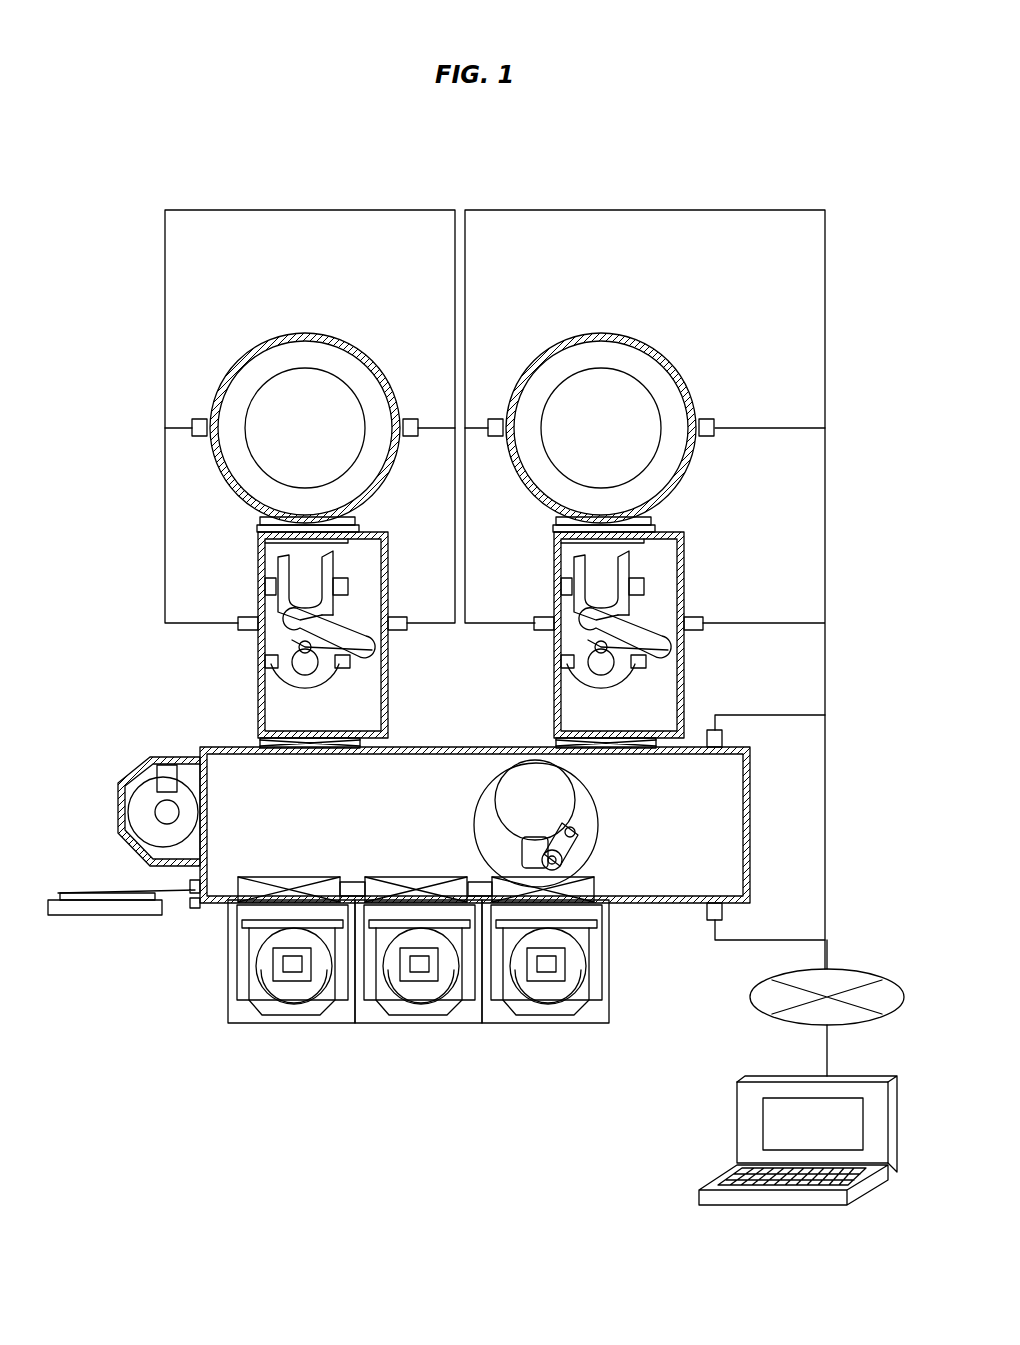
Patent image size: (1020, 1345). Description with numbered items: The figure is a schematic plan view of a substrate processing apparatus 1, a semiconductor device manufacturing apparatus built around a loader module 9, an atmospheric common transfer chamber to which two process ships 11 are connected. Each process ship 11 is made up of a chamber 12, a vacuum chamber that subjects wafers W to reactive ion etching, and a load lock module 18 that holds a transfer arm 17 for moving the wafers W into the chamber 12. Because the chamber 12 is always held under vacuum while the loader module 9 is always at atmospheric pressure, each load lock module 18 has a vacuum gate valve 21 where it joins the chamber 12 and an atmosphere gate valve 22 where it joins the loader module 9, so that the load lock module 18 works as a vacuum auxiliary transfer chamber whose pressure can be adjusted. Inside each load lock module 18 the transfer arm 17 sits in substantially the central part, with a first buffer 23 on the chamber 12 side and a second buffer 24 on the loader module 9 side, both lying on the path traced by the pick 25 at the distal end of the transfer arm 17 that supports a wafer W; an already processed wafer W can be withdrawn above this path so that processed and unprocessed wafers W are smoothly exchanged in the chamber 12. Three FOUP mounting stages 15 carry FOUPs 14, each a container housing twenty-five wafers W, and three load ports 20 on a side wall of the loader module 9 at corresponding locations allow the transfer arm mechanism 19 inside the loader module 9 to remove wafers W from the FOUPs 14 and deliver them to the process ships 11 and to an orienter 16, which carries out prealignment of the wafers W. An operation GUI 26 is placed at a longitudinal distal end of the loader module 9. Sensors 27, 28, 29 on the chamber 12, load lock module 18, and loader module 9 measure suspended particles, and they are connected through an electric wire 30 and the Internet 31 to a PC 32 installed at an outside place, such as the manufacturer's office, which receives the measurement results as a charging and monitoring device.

The substrate processing apparatus 1 is at (455, 170).
The loader module 9 is at (742, 745).
The process ship 11 is at (455, 378).
The chamber 12 is at (360, 347).
The FOUP 14 is at (258, 1015).
The FOUP mounting stage 15 is at (306, 1023).
The orienter 16 is at (130, 780).
The transfer arm 17 is at (372, 618).
The load lock module 18 is at (388, 576).
The transfer arm mechanism 19 is at (475, 825).
The load port 20 is at (293, 877).
The vacuum gate valve 21 is at (262, 518).
The atmosphere gate valve 22 is at (365, 742).
The first buffer 23 is at (268, 586).
The second buffer 24 is at (268, 662).
The pick 25 is at (345, 560).
The operation GUI 26 is at (75, 928).
The sensor 27 is at (192, 432).
The sensor 28 is at (246, 630).
The sensor 29 is at (714, 730).
The electric wire 30 is at (826, 292).
The Internet 31 is at (840, 972).
The PC 32 is at (737, 1115).
The wafer W is at (570, 780).